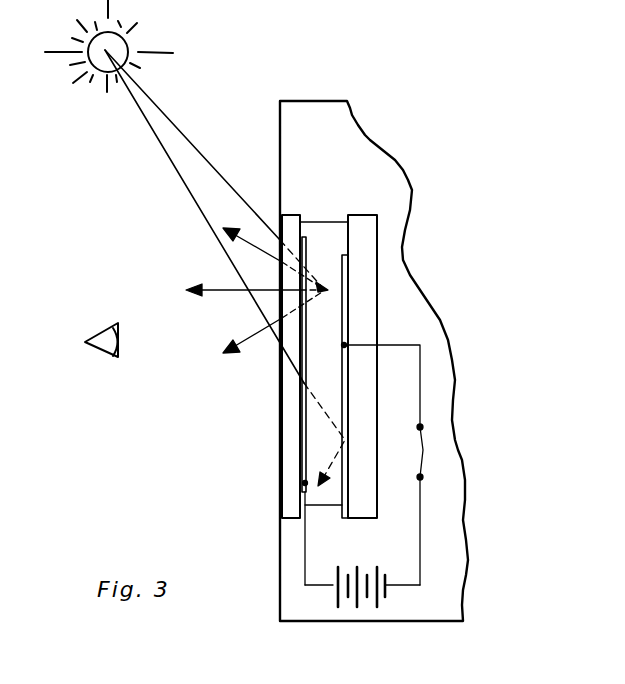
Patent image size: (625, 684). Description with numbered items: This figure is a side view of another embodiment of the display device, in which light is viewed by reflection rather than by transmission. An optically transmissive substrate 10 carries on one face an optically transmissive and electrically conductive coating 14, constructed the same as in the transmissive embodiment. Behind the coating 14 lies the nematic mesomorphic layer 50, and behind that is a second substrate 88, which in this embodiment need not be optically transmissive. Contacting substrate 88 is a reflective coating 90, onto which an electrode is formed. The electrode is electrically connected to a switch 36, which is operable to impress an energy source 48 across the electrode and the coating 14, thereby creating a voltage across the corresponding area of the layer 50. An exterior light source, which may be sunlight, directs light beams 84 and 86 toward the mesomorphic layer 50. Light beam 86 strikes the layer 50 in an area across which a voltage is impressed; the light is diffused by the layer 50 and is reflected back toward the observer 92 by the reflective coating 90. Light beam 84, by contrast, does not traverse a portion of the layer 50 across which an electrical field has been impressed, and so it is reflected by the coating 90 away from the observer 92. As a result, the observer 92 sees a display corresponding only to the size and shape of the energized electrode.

The substrate 10 is at (288, 428).
The coating 14 is at (300, 482).
The switch 36 is at (423, 447).
The source of electrical energy 48 is at (380, 596).
The mesomorphic layer 50 is at (336, 232).
The light beam 84 is at (150, 110).
The light beam 86 is at (158, 108).
The substrate 88 is at (372, 318).
The reflective coating 90 is at (350, 228).
The observer 92 is at (114, 326).